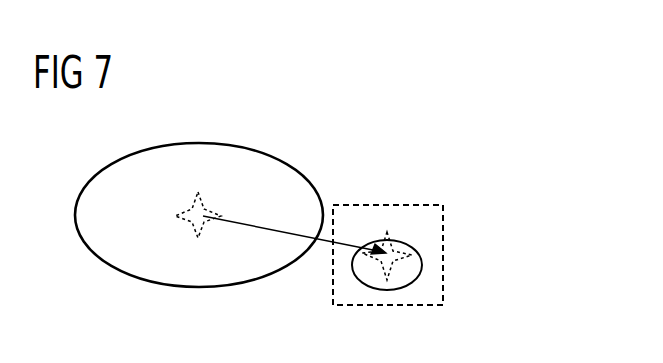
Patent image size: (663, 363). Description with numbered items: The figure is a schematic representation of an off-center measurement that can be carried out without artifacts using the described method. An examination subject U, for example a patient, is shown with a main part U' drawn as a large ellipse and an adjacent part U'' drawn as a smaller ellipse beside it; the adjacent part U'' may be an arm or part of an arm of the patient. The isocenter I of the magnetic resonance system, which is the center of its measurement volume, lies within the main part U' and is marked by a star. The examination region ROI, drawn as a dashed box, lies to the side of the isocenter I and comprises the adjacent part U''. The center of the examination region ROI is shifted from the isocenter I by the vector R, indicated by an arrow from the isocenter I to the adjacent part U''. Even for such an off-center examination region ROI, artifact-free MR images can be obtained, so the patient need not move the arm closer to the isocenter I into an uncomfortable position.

The examination subject U is at (290, 90).
The main part of the examination subject U' is at (199, 243).
The adjacent part of the examination subject U'' is at (420, 263).
The isocenter I is at (194, 208).
The vector R is at (282, 235).
The examination region ROI is at (443, 233).